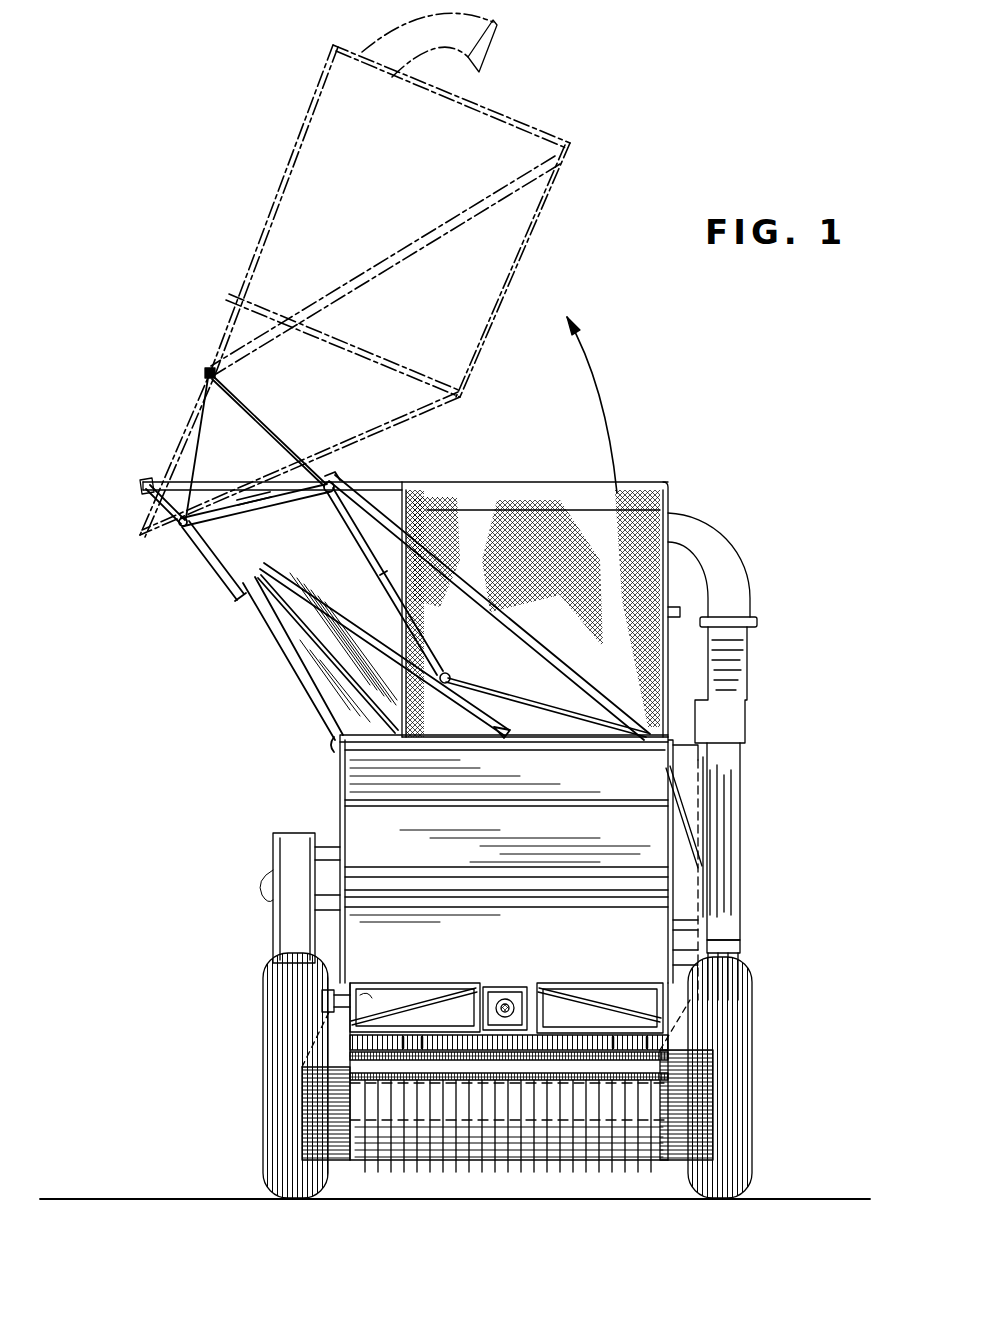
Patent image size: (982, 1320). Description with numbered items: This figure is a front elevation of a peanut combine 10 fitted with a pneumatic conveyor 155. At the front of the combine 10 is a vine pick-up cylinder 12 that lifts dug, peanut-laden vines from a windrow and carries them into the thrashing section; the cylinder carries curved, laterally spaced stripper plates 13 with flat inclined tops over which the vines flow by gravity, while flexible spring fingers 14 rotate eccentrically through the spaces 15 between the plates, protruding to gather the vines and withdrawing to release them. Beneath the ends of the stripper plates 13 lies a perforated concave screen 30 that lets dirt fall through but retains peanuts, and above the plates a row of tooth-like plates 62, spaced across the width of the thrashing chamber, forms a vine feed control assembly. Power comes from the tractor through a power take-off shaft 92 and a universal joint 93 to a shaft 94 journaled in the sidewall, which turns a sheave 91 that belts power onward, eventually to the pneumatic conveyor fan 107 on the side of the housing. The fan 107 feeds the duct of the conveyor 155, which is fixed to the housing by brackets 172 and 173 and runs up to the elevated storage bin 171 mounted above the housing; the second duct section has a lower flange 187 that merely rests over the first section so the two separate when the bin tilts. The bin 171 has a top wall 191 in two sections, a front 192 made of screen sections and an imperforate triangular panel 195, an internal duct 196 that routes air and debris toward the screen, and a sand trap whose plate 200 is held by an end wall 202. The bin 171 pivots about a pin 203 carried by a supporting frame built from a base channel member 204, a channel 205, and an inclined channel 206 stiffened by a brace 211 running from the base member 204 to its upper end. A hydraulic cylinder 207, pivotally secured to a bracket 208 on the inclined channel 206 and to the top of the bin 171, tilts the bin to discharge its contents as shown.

The peanut combine 10 is at (262, 776).
The vine pick-up cylinder 12 is at (490, 1190).
The stripper plates 13 is at (410, 1160).
The flexible spring fingers 14 is at (467, 1160).
The spaces between stripper plates 15 is at (547, 1143).
The concave screen 30 is at (570, 1053).
The tooth-like plates 62 is at (422, 1037).
The sheave 91 is at (327, 985).
The power take-off shaft 92 is at (510, 995).
The universal joint 93 is at (490, 985).
The shaft 94 is at (378, 1005).
The pneumatic conveyor fan 107 is at (290, 858).
The pneumatic conveyor 155 is at (768, 875).
The elevated storage bin 171 is at (268, 136).
The bracket 172 is at (690, 827).
The bracket 173 is at (690, 743).
The flange 187 is at (757, 620).
The top wall 191 is at (513, 480).
The front of bin 192 is at (700, 530).
The triangularly shaped panel 195 is at (263, 544).
The duct 196 is at (588, 507).
The sand trap plate 200 is at (207, 573).
The end wall of sand trap 202 is at (236, 600).
The pin 203 is at (182, 532).
The base channel member 204 is at (460, 740).
The channel 205 is at (287, 655).
The inclined channel 206 is at (430, 687).
The hydraulic cylinder 207 is at (423, 623).
The bracket 208 is at (458, 687).
The brace 211 is at (553, 653).